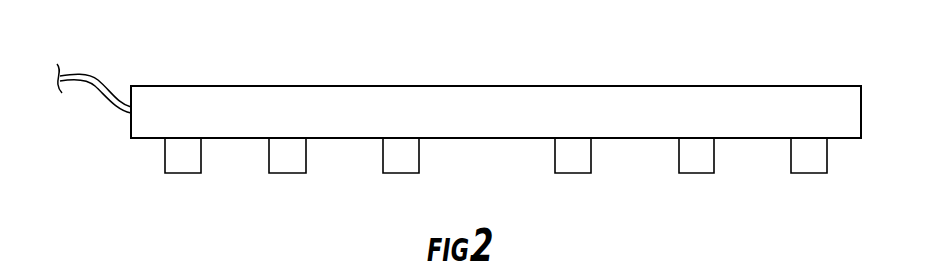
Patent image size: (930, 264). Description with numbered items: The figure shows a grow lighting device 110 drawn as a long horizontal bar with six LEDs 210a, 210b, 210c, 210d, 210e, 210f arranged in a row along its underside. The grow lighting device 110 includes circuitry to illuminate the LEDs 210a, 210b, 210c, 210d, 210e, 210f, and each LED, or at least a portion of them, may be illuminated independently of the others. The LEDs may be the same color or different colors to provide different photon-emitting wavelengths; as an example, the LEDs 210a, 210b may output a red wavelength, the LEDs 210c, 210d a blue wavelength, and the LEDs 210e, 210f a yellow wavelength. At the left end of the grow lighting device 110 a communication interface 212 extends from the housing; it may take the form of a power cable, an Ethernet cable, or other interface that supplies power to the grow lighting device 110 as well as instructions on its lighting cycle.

The grow lighting device 110 is at (810, 86).
The communication interface 212 is at (142, 45).
The LED 210a is at (200, 189).
The LED 210b is at (305, 189).
The LED 210c is at (418, 189).
The LED 210d is at (591, 189).
The LED 210e is at (714, 189).
The LED 210f is at (826, 189).